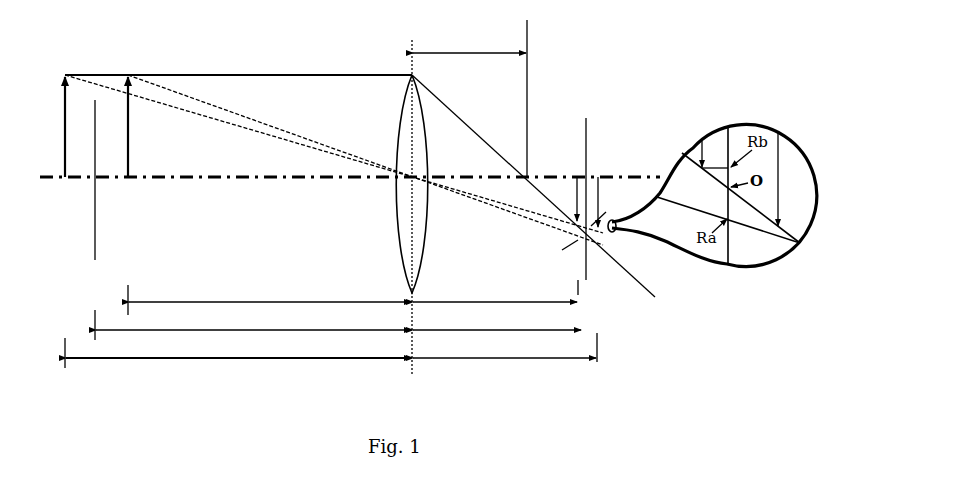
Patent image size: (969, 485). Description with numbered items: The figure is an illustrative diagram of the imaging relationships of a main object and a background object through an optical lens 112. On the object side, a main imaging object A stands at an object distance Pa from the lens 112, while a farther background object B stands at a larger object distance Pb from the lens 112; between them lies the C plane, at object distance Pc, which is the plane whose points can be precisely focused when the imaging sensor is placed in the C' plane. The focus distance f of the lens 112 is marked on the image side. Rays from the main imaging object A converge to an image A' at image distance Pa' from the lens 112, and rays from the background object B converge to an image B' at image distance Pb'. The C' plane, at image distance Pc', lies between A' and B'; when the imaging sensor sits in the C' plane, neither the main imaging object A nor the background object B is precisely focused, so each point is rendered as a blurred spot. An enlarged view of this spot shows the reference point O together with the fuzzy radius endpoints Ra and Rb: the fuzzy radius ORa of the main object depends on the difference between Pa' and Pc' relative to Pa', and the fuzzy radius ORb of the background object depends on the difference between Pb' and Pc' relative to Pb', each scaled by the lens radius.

The lens 112 is at (398, 101).
The main imaging object A is at (132, 147).
The background object B is at (55, 147).
The C plane C is at (87, 180).
The focus distance f is at (470, 98).
The image of the main imaging object A' is at (600, 187).
The image of the background object B' is at (572, 184).
The C' plane C' is at (582, 186).
The point O is at (612, 226).
The fuzzy radius endpoint Ra is at (559, 253).
The fuzzy radius endpoint Rb is at (608, 209).
The object distance of main imaging object Pa is at (269, 294).
The object distance of background object Pb is at (238, 348).
The object distance of C plane Pc is at (253, 320).
The image distance of main imaging object Pa' is at (505, 345).
The image distance of background object Pb' is at (495, 288).
The image distance of C' plane Pc' is at (497, 316).